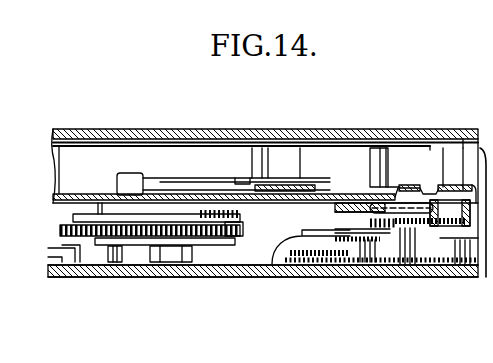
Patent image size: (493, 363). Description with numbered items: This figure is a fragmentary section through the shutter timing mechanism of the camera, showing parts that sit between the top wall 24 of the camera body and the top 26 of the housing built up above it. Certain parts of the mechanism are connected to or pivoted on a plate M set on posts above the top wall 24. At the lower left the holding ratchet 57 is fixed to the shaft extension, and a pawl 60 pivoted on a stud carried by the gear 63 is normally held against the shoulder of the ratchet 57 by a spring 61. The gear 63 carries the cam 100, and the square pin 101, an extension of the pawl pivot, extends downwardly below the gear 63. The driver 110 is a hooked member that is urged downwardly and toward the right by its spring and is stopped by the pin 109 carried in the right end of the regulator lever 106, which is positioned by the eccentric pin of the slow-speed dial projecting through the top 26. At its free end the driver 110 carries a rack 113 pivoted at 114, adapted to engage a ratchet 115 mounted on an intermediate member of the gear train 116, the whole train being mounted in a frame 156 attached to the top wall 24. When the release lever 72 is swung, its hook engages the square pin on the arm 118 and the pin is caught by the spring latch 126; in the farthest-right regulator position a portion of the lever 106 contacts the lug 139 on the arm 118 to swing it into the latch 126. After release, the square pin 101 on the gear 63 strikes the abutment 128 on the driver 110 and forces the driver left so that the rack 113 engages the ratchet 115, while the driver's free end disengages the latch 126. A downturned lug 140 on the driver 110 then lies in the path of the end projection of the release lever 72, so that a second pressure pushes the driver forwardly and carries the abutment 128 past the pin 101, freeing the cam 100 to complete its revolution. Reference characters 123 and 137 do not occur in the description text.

The top of housing 26 is at (63, 129).
The plate M is at (73, 145).
The driver 110 is at (133, 175).
The release lever 72 is at (257, 158).
The spacer 123 is at (276, 185).
The lug 139 is at (296, 156).
The pin 109 is at (379, 158).
The lever (regulator) 106 is at (415, 147).
The arm 118 is at (421, 190).
The end wall 137 is at (460, 150).
The downturned lug 140 is at (224, 188).
The ratchet 115 is at (362, 200).
The cam 100 is at (228, 221).
The spring latch 126 is at (372, 207).
The gear 63 is at (240, 236).
The pawl 60 is at (193, 262).
The top wall of camera body 24 is at (241, 278).
The frame 156 is at (275, 264).
The spring 61 is at (82, 278).
The abutment 128 is at (137, 278).
The square pin 101 is at (153, 278).
The holding ratchet 57 is at (167, 278).
The rack 113 is at (403, 278).
The gear train 116 is at (427, 278).
The pivot of rack 114 is at (454, 278).